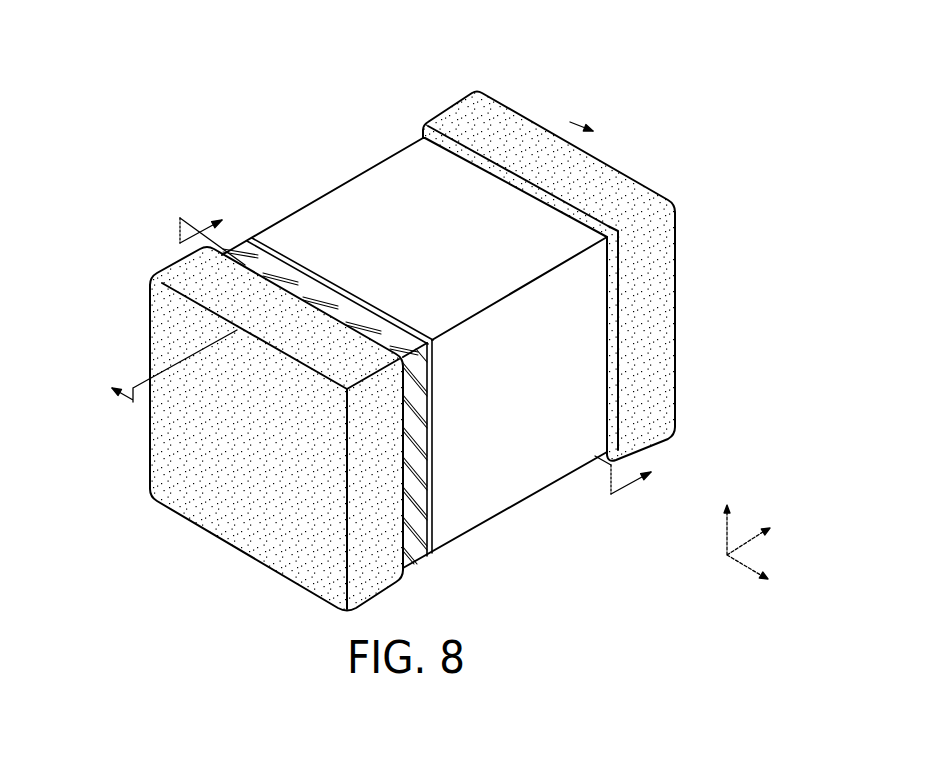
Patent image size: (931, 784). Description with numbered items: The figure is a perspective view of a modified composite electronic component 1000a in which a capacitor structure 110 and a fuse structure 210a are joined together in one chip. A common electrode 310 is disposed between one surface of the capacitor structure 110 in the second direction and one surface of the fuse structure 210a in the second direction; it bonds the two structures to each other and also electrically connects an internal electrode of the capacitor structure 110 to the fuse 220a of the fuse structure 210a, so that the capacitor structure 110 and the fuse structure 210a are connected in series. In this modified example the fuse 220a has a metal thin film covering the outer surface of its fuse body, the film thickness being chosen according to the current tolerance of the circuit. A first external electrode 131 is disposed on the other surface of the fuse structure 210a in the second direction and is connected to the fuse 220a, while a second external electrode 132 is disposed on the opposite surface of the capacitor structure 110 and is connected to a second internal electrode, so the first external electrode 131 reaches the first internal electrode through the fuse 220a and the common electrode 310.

The composite electronic component 1000a is at (284, 19).
The capacitor structure 110 is at (393, 160).
The first external electrode 131 is at (178, 273).
The second external electrode 132 is at (477, 92).
The fuse structure 210a is at (267, 253).
The fuse 220a is at (432, 483).
The common electrode 310 is at (432, 526).